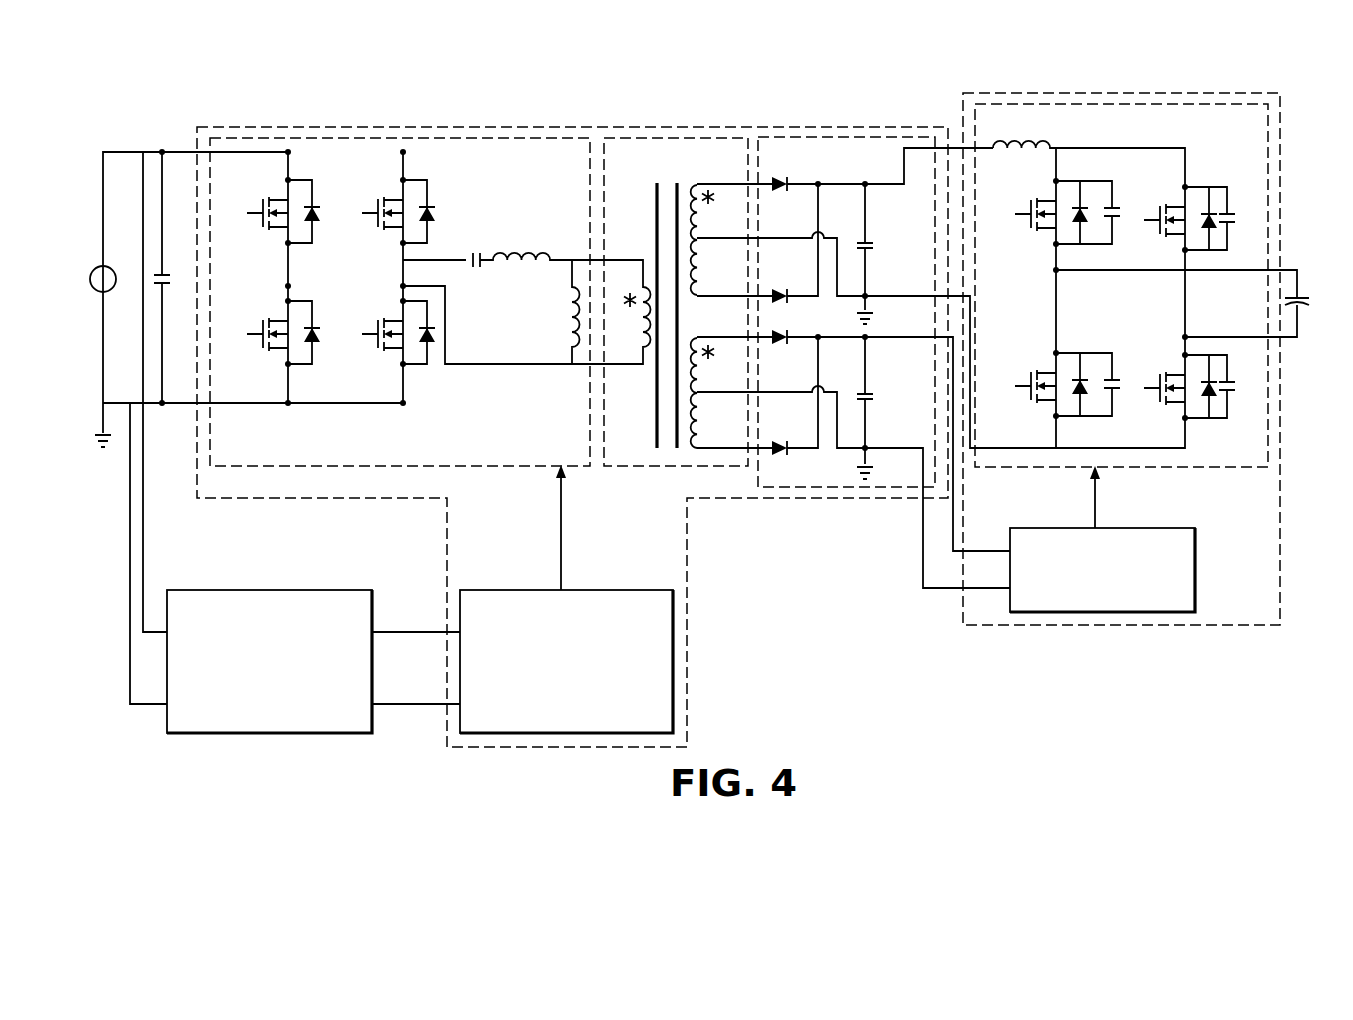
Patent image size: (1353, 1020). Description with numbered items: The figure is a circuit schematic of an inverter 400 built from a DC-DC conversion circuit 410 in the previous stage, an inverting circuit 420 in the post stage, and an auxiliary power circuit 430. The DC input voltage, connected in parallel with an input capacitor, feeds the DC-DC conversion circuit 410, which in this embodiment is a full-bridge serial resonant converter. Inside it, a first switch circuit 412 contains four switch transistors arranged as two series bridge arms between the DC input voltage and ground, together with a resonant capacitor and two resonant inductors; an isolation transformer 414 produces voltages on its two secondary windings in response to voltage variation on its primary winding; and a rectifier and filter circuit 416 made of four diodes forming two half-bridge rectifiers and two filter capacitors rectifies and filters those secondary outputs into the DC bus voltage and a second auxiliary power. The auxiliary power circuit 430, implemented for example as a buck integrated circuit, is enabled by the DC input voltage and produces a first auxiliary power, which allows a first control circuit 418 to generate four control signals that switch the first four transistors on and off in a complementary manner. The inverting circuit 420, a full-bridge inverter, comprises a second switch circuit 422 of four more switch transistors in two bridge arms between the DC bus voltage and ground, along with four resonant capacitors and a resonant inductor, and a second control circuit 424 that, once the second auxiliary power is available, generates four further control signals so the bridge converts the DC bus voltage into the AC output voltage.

The inverter 400 is at (693, 396).
The DC-DC conversion circuit 410 is at (626, 407).
The first switch circuit 412 is at (535, 136).
The isolation transformer 414 is at (688, 136).
The rectifier and filter circuit 416 is at (805, 136).
The first control circuit 418 is at (493, 588).
The inverting circuit 420 is at (1152, 335).
The second switch circuit 422 is at (1088, 103).
The second control circuit 424 is at (1197, 572).
The auxiliary power circuit 430 is at (260, 588).